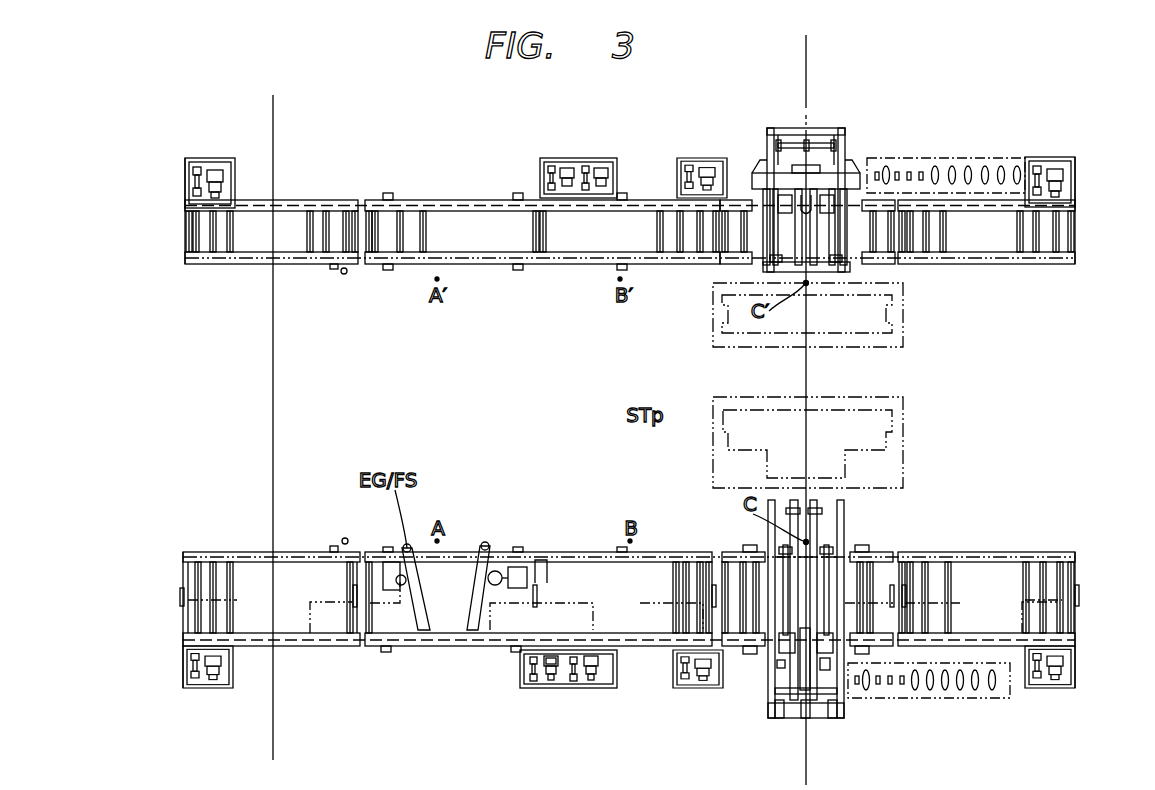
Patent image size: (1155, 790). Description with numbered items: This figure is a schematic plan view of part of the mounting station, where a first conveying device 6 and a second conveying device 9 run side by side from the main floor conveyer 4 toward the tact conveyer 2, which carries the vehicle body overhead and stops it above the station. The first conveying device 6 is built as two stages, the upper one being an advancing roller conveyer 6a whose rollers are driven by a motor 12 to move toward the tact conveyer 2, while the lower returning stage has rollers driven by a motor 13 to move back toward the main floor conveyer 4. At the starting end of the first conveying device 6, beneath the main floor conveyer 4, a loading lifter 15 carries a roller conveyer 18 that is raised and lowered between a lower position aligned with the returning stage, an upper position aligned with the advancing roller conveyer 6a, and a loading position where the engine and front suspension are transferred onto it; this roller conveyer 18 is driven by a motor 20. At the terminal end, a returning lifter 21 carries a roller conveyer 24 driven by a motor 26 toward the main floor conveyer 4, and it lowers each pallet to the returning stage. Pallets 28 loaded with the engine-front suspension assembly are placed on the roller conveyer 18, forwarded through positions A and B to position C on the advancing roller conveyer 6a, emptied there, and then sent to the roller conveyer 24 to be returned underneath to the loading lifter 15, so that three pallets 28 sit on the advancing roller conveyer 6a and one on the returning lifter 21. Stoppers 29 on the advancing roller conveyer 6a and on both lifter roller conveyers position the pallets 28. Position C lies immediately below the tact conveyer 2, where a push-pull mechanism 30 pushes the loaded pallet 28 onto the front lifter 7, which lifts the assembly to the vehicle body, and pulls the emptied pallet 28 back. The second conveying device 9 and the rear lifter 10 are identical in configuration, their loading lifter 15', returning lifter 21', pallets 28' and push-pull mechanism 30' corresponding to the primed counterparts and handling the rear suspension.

The tact conveyer 2 is at (814, 60).
The main floor conveyer 4 is at (282, 100).
The first conveying device 6 is at (544, 636).
The advancing roller conveyer 6a is at (690, 568).
The front lifter 7 is at (912, 455).
The second conveying device 9 is at (642, 196).
The rear lifter 10 is at (912, 337).
The motor 12 is at (556, 685).
The motor 13 is at (595, 683).
The loading lifter 15 is at (238, 634).
The loading lifter 15' is at (271, 206).
The roller conveyer 18 is at (206, 618).
The motor 20 is at (217, 681).
The returning lifter 21 is at (994, 611).
The returning lifter 21' is at (971, 245).
The roller conveyer 24 is at (1055, 612).
The motor 26 is at (1040, 683).
The pallet 28 is at (629, 479).
The pallet 28' is at (637, 321).
The stopper 29 is at (181, 596).
The push-pull mechanism 30 is at (788, 629).
The push-pull mechanism 30' is at (810, 185).